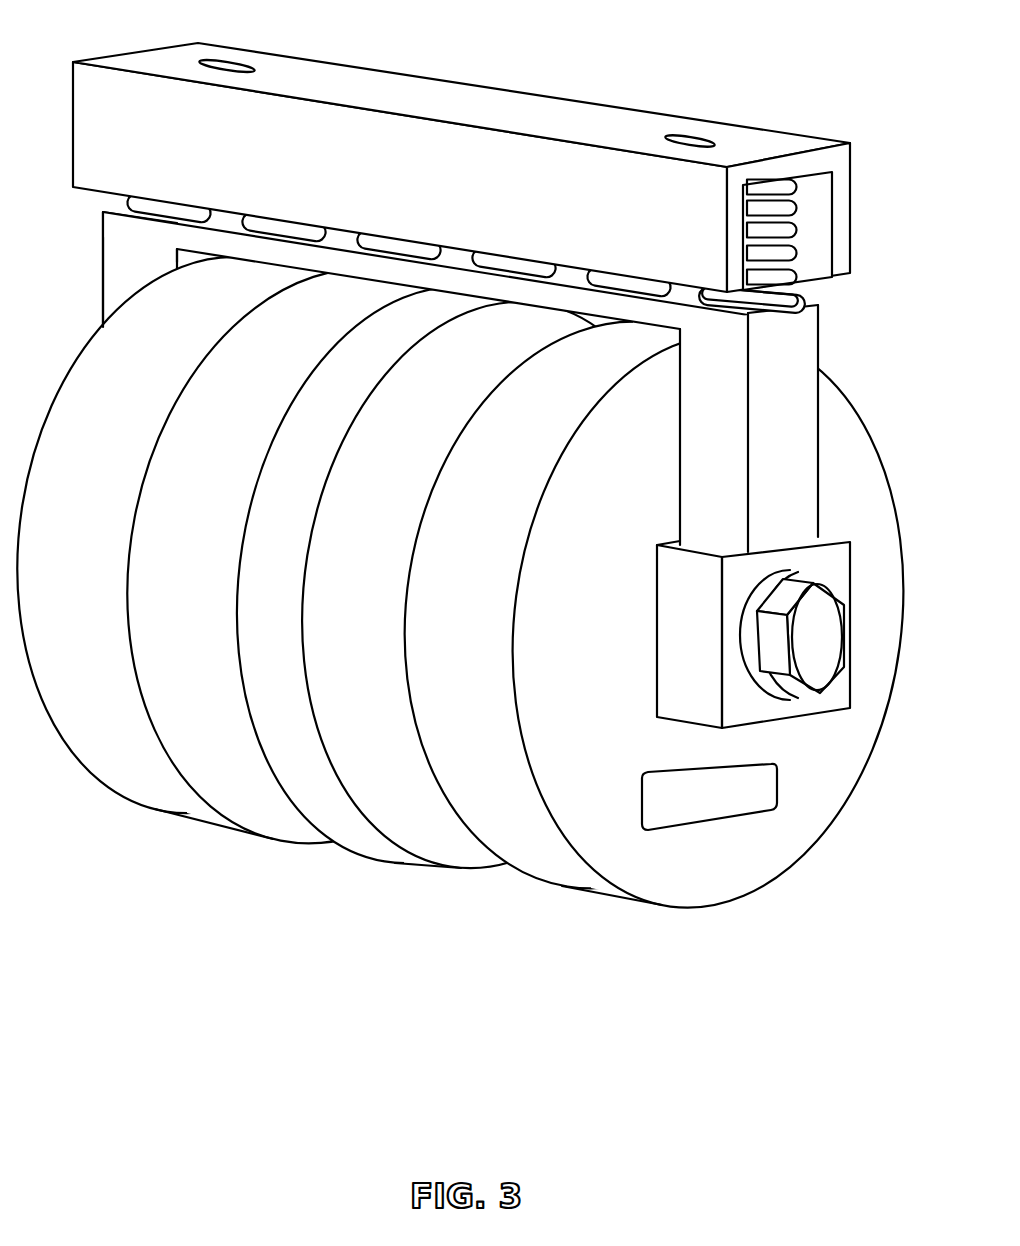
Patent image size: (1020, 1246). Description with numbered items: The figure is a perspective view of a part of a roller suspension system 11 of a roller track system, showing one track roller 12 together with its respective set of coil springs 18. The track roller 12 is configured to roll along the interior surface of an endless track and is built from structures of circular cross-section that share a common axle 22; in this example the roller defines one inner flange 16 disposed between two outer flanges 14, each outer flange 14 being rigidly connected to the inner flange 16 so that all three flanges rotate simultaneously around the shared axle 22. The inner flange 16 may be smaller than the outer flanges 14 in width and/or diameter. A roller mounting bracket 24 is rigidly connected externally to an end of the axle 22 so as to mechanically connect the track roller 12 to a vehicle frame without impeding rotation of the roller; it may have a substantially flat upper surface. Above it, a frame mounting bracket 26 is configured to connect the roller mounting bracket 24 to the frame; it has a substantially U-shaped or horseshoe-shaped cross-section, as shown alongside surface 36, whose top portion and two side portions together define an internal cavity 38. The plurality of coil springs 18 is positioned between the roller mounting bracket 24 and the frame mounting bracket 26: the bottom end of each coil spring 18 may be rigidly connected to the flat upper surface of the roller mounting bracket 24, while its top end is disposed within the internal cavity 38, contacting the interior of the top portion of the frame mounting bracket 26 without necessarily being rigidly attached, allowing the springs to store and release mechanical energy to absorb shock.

The roller suspension system 11 is at (469, 58).
The track roller 12 is at (468, 580).
The outer flange 14 is at (204, 599).
The inner flange 16 is at (374, 607).
The coil spring 18 is at (793, 262).
The axle 22 is at (832, 650).
The roller mounting bracket 24 is at (782, 380).
The frame mounting bracket 26 is at (419, 193).
The surface 36 is at (801, 163).
The internal cavity 38 is at (829, 223).